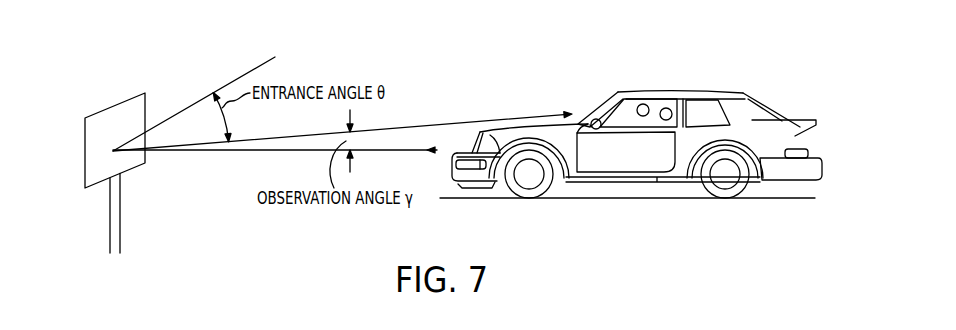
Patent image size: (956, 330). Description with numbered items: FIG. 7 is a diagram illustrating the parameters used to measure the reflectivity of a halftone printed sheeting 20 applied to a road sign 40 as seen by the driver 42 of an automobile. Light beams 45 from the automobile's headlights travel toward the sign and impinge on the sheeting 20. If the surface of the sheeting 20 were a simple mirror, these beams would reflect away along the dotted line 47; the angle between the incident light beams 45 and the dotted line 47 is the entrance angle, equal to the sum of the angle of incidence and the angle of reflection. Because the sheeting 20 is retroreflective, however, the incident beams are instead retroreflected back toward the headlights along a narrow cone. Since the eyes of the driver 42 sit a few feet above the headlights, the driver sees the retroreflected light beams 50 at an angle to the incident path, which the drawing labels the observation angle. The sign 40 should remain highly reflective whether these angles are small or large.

The halftone printed sheeting 20 is at (135, 107).
The road sign 40 is at (97, 137).
The driver 42 is at (693, 82).
The light beams 45 is at (382, 150).
The dotted line 47 is at (260, 65).
The retroreflected light beams 50 is at (459, 122).